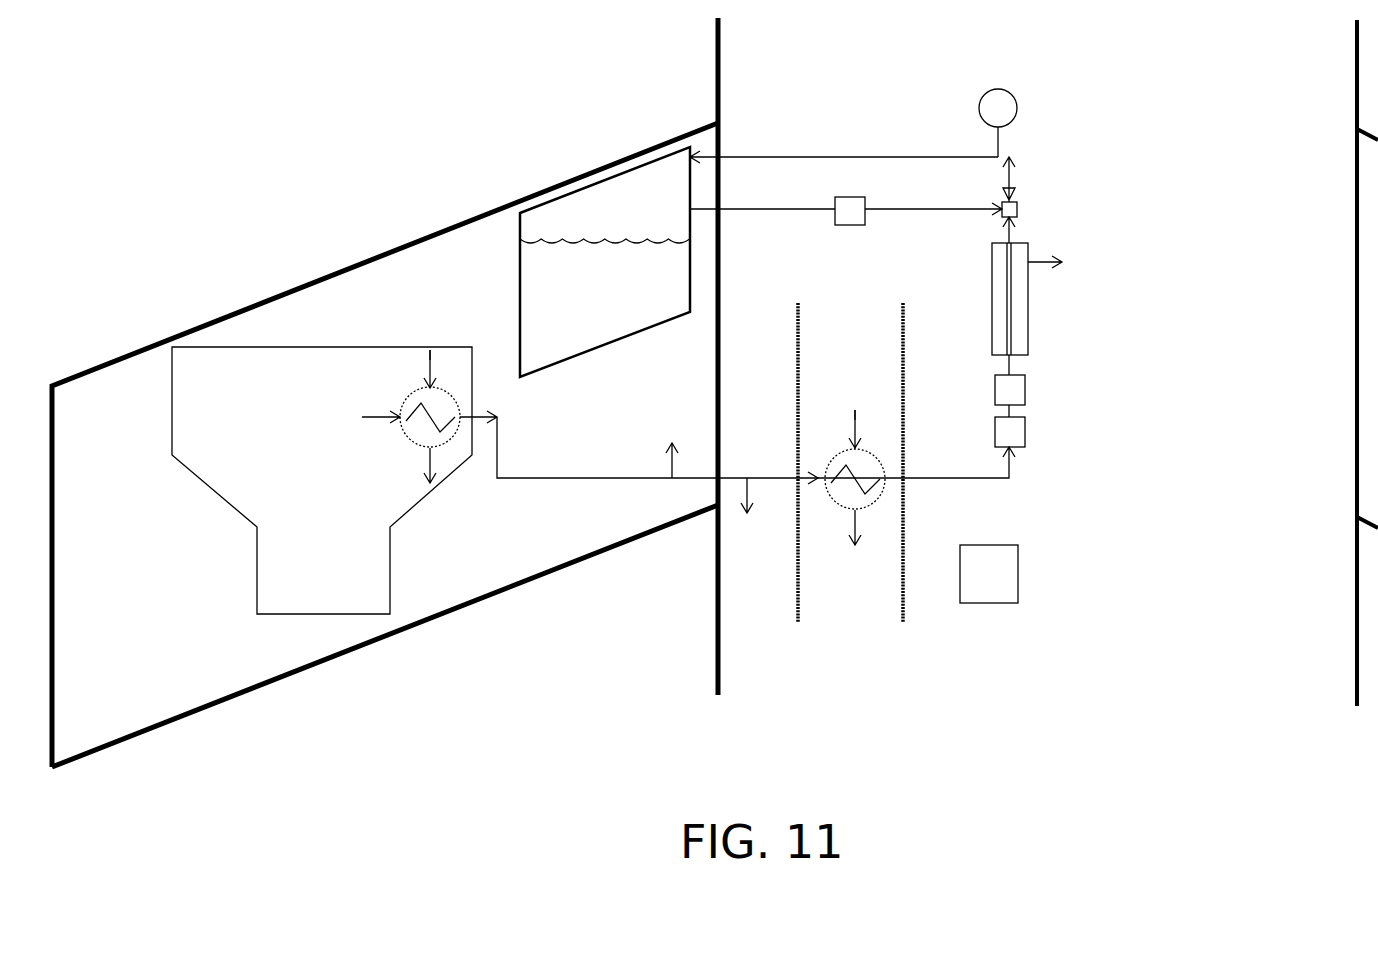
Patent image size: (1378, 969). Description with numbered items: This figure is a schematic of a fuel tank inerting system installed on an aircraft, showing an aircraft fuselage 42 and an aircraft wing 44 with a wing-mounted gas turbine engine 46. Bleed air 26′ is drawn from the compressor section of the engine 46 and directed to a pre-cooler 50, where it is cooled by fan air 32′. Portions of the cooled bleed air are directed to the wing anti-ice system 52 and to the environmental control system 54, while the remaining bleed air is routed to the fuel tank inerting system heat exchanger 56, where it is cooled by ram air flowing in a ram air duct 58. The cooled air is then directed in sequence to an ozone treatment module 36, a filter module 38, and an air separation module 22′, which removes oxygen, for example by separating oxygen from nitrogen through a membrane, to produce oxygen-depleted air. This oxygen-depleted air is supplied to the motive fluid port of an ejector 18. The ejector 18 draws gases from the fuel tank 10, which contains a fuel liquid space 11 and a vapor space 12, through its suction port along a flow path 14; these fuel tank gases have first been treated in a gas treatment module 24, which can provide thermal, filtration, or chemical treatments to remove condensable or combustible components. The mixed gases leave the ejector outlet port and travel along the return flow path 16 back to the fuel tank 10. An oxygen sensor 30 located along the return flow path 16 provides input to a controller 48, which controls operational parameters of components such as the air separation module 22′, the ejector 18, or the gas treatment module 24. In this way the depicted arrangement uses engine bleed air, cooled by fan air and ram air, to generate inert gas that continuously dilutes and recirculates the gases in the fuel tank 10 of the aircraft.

The fuel tank 10 is at (518, 320).
The fuel liquid space 11 is at (543, 289).
The vapor space 12 is at (562, 222).
The flow path 14 is at (762, 212).
The return flow path 16 is at (760, 155).
The ejector 18 is at (1017, 203).
The air separation module 22′ is at (1028, 303).
The gas treatment module 24 is at (862, 228).
The bleed air 26′ is at (378, 417).
The oxygen sensor 30 is at (1017, 118).
The fan air 32′ is at (401, 330).
The ozone treatment module 36 is at (1025, 432).
The filter module 38 is at (1025, 387).
The aircraft fuselage 42 is at (718, 648).
The aircraft wing 44 is at (317, 278).
The gas turbine engine 46 is at (223, 498).
The controller 48 is at (1018, 583).
The pre-cooler 50 is at (412, 442).
The wing anti-ice system 52 is at (672, 472).
The environmental control system 54 is at (740, 493).
The fuel tank inerting system heat exchanger 56 is at (835, 503).
The ram air duct 58 is at (905, 513).